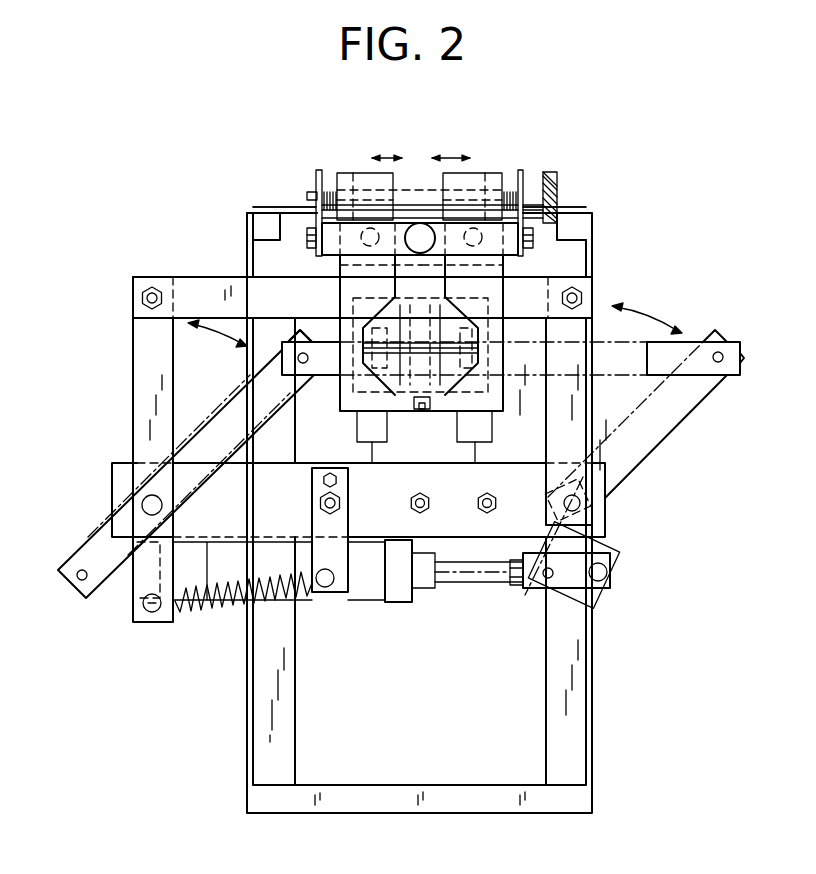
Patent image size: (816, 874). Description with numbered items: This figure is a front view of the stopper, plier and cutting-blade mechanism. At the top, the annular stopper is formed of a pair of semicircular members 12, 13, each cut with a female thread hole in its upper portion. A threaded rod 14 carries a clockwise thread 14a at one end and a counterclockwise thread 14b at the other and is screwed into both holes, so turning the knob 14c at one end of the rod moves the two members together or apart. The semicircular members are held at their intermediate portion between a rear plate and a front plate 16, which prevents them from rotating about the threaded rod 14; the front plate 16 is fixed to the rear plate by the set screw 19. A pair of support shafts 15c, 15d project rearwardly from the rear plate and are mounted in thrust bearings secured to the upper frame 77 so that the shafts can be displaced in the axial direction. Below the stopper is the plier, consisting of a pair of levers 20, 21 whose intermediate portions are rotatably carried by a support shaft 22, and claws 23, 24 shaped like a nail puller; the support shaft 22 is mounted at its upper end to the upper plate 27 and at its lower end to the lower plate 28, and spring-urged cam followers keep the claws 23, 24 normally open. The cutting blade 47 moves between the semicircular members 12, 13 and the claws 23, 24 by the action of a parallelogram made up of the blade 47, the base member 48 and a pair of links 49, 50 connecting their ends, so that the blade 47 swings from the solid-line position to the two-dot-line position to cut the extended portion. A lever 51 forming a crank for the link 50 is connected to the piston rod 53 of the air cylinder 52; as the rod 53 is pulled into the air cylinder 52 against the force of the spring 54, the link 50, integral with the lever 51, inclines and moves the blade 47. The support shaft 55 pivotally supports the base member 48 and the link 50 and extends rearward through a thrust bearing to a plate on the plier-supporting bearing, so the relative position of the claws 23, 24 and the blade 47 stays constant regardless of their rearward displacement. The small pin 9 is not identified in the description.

The clamp bracket pin 9 is at (330, 530).
The semicircular member 12 is at (347, 412).
The semicircular member 13 is at (488, 401).
The threaded rod 14 is at (430, 195).
The clockwise thread 14a is at (333, 197).
The counterclockwise thread 14b is at (509, 195).
The knob 14c is at (548, 172).
The support shaft 15c is at (364, 244).
The support shaft 15d is at (482, 246).
The front plate 16 is at (524, 240).
The set screw 19 is at (420, 236).
The lever 20 is at (406, 360).
The lever 21 is at (443, 360).
The support shaft 22 is at (430, 412).
The claw 23 is at (370, 355).
The claw 24 is at (478, 350).
The upper plate 27 is at (355, 303).
The lower plate 28 is at (355, 394).
The cutting blade 47 is at (214, 292).
The base member 48 is at (512, 464).
The link 49 is at (233, 413).
The link 50 is at (580, 390).
The lever 51 is at (600, 546).
The air cylinder 52 is at (362, 596).
The piston rod 53 is at (468, 582).
The spring 54 is at (207, 604).
The support shaft 55 is at (582, 501).
The upper frame 77 is at (288, 212).